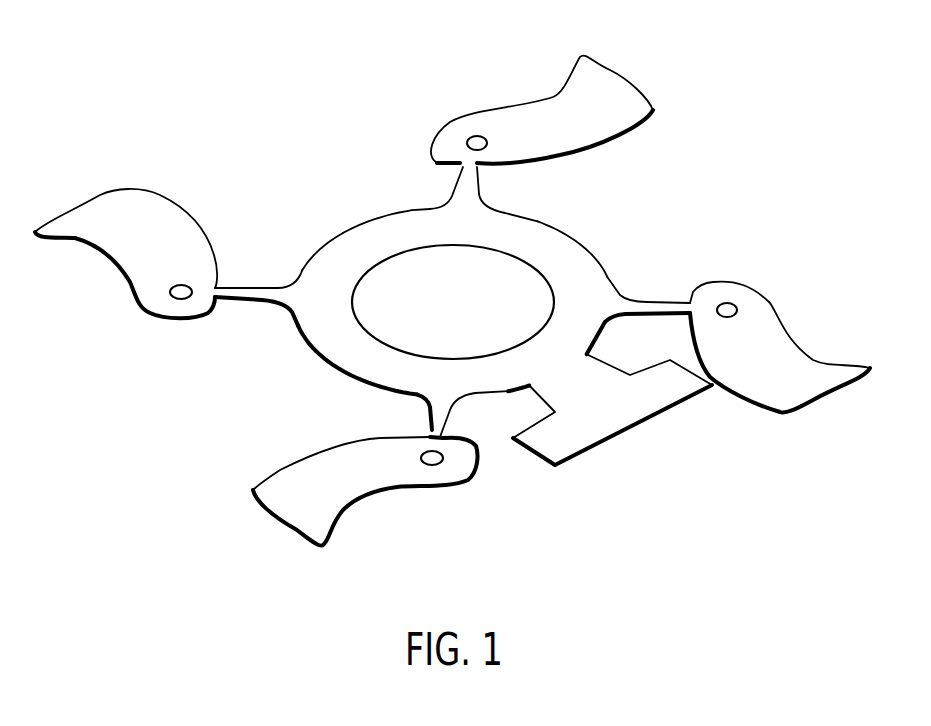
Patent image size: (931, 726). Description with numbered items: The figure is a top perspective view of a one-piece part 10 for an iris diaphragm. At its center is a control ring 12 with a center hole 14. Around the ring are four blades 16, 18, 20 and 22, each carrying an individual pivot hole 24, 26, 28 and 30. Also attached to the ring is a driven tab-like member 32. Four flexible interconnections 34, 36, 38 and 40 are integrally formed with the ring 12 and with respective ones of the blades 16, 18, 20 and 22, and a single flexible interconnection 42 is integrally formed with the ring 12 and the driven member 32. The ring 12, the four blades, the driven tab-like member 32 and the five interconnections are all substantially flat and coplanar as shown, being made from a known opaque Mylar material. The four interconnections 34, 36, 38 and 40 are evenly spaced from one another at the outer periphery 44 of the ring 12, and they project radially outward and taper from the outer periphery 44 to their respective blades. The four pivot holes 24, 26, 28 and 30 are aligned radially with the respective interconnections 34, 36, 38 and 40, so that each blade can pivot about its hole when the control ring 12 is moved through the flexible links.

The one-piece part 10 is at (294, 128).
The control ring 12 is at (309, 364).
The center hole 14 is at (468, 314).
The blade 16 is at (315, 527).
The blade 18 is at (72, 228).
The blade 20 is at (565, 98).
The blade 22 is at (807, 365).
The pivot hole 24 is at (433, 467).
The pivot hole 26 is at (178, 300).
The pivot hole 28 is at (477, 133).
The pivot hole 30 is at (732, 308).
The driven tab-like member 32 is at (640, 402).
The flexible interconnection 34 is at (433, 427).
The flexible interconnection 36 is at (250, 290).
The flexible interconnection 38 is at (473, 183).
The flexible interconnection 40 is at (645, 305).
The single flexible interconnection 42 is at (568, 383).
The outer periphery 44 is at (353, 230).